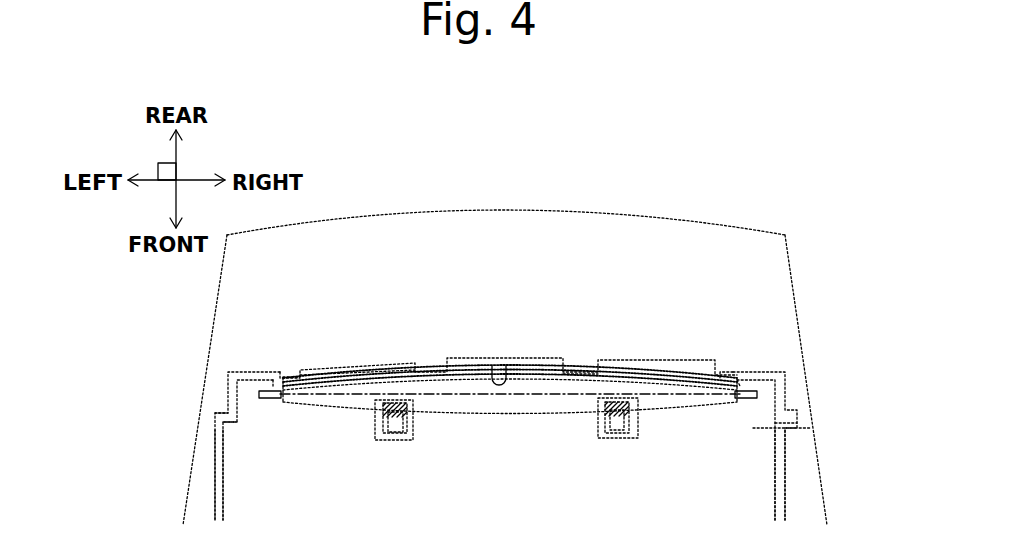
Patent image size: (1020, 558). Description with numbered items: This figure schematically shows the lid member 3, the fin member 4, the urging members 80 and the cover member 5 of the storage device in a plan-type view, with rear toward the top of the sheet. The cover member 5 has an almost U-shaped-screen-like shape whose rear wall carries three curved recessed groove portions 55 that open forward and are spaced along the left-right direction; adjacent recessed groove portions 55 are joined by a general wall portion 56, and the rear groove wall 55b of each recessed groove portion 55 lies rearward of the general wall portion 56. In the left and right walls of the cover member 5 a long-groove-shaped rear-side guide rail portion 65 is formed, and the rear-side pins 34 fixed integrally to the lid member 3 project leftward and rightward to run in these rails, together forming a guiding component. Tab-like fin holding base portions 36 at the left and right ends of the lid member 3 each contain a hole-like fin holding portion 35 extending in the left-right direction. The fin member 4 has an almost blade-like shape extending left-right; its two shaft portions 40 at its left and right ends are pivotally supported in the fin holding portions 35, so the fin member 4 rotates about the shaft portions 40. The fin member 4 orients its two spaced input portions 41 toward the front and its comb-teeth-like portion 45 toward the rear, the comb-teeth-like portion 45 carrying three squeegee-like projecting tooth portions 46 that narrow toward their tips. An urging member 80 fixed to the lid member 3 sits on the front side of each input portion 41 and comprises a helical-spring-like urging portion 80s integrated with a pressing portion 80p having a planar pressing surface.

The lid member 3 is at (790, 260).
The fin member 4 is at (487, 410).
The cover member 5 is at (510, 335).
The rear-side pin 34 is at (230, 435).
The fin holding portion 35 is at (268, 392).
The fin holding base portion 36 is at (250, 397).
The shaft portion 40 is at (266, 400).
The input portion 41 is at (535, 401).
The comb-teeth-like portion 45 is at (523, 362).
The projecting tooth portion 46 is at (370, 373).
The recessed groove portion 55 is at (350, 375).
The rear groove wall 55b is at (508, 367).
The general wall portion 56 is at (582, 341).
The rear-side guide rail portion 65 is at (217, 432).
The urging member 80 is at (600, 418).
The pressing portion 80p is at (635, 402).
The urging portion 80s is at (627, 427).